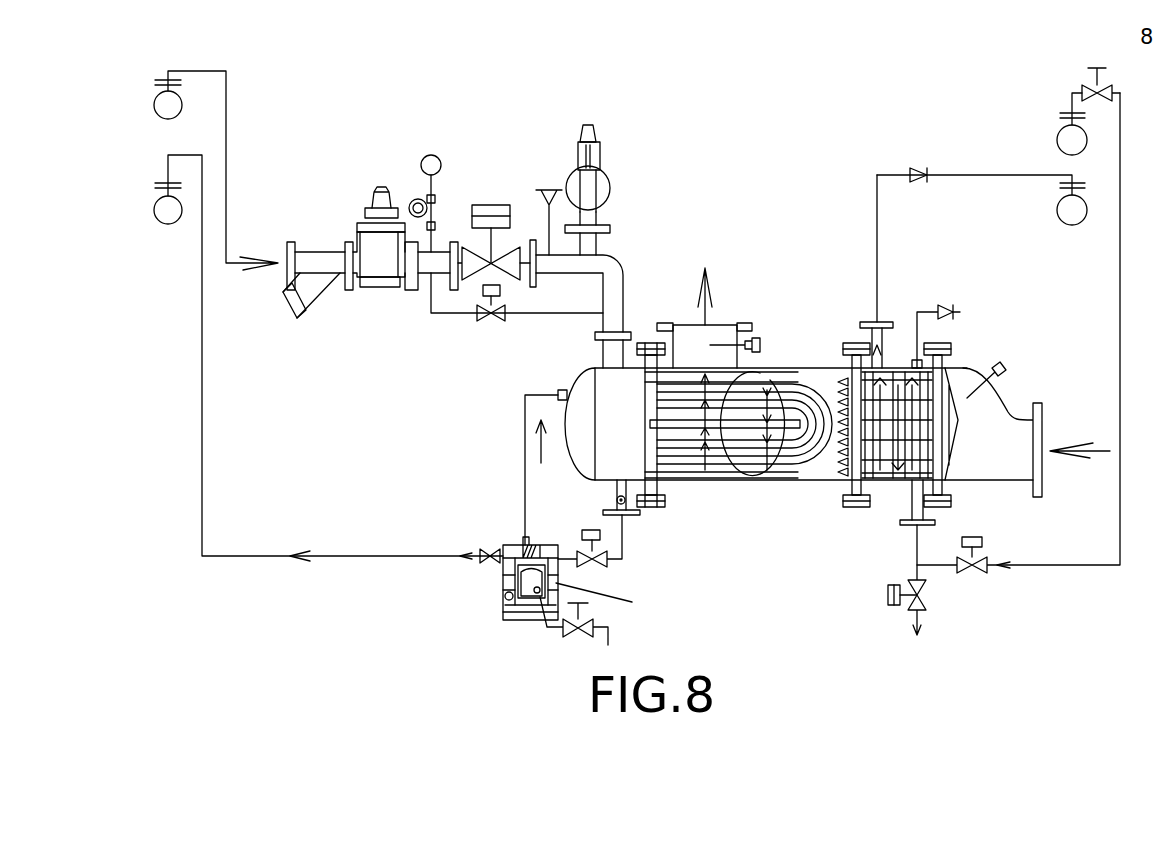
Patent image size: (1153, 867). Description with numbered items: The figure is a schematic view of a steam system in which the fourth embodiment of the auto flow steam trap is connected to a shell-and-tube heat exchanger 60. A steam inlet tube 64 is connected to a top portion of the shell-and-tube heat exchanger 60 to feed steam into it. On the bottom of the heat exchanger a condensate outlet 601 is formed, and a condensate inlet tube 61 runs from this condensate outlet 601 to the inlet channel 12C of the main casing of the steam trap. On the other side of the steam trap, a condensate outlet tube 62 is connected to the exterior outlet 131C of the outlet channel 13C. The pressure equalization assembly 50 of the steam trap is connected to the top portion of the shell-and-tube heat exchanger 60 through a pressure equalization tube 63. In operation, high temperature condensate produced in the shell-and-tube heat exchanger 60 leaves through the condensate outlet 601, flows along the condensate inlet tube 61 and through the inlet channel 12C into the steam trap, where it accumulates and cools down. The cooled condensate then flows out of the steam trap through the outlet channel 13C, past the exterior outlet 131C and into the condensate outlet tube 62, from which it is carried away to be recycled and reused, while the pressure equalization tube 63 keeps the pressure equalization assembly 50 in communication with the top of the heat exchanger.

The shell-and-tube heat exchanger 60 is at (779, 330).
The condensate outlet 601 is at (605, 513).
The condensate inlet tube 61 is at (622, 543).
The condensate outlet tube 62 is at (375, 556).
The pressure equalization tube 63 is at (525, 422).
The steam inlet tube 64 is at (238, 262).
The pressure equalization assembly 50 is at (526, 543).
The inlet channel 12C is at (560, 566).
The outlet channel 13C is at (503, 556).
The exterior outlet 131C is at (503, 566).